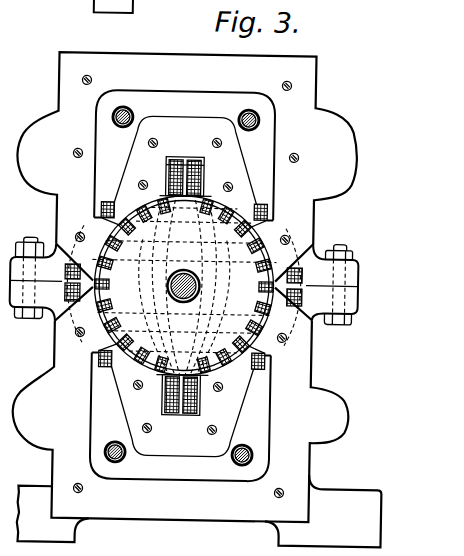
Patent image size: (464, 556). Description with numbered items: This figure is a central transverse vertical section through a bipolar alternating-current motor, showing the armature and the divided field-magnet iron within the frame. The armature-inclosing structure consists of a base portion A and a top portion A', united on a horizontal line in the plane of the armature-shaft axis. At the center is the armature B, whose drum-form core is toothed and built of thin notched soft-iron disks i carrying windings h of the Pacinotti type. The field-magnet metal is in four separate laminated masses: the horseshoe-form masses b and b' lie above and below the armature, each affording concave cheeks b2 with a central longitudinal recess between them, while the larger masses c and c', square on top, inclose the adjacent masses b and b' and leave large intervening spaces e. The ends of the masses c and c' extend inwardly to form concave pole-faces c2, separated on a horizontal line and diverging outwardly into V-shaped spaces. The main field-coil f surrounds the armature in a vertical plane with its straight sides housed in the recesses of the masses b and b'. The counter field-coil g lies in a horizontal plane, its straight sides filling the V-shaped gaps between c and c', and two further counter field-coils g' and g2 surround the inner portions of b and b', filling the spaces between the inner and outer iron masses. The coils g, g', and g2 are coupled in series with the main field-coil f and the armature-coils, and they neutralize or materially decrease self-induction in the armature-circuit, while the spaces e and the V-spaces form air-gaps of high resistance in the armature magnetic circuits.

The base portion A is at (197, 431).
The top portion A' is at (187, 149).
The armature B is at (184, 285).
The upper field-magnet mass b is at (186, 160).
The lower field-magnet mass b' is at (181, 411).
The concave cheeks b2 is at (182, 296).
The upper outer field-magnet mass c is at (185, 141).
The lower outer field-magnet mass c' is at (180, 432).
The concave pole-faces c2 is at (183, 284).
The intervening spaces e is at (180, 286).
The main field-coil f is at (163, 182).
The counter field-coil g is at (183, 281).
The upper counter field-coil g' is at (182, 206).
The lower counter field-coil g2 is at (101, 364).
The armature windings h is at (110, 286).
The notched disks i is at (183, 286).